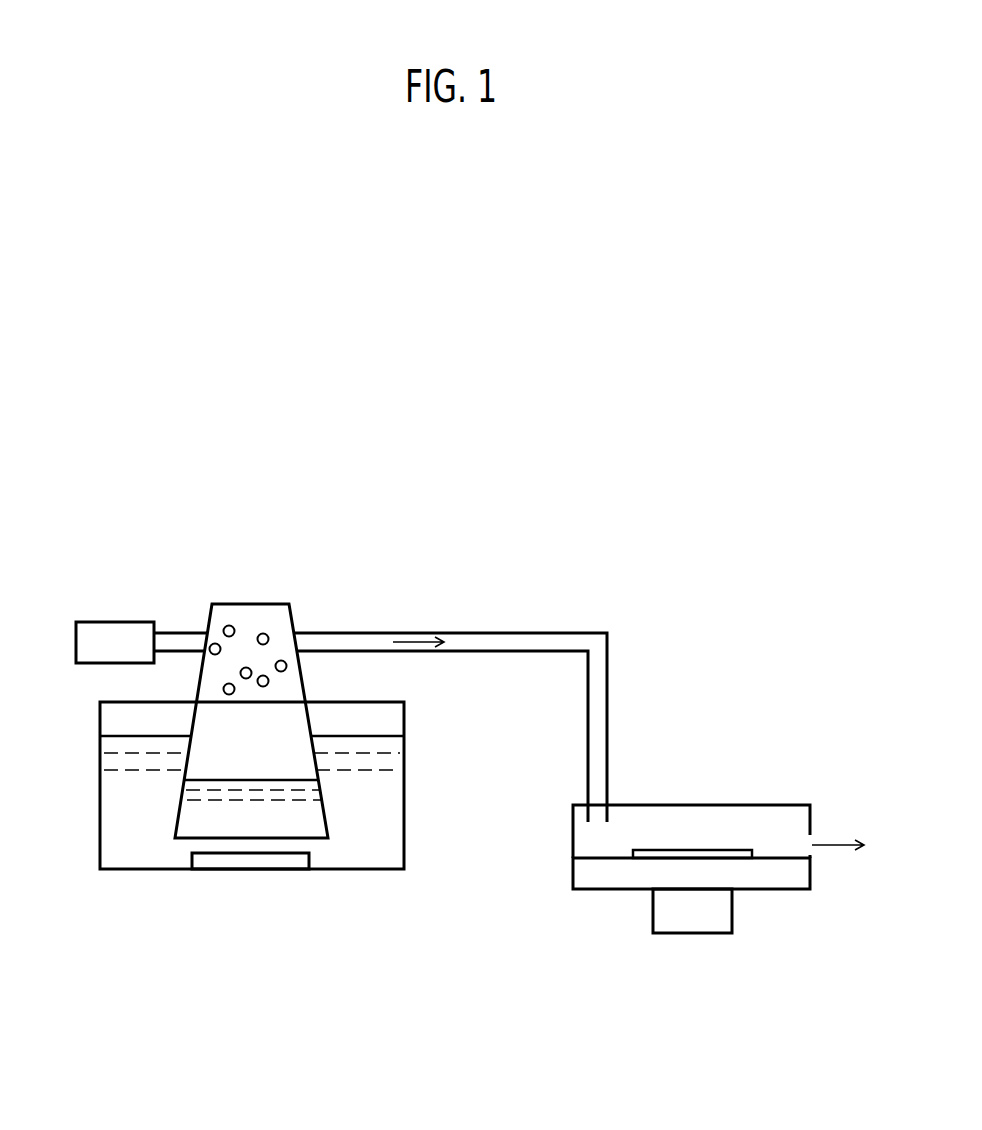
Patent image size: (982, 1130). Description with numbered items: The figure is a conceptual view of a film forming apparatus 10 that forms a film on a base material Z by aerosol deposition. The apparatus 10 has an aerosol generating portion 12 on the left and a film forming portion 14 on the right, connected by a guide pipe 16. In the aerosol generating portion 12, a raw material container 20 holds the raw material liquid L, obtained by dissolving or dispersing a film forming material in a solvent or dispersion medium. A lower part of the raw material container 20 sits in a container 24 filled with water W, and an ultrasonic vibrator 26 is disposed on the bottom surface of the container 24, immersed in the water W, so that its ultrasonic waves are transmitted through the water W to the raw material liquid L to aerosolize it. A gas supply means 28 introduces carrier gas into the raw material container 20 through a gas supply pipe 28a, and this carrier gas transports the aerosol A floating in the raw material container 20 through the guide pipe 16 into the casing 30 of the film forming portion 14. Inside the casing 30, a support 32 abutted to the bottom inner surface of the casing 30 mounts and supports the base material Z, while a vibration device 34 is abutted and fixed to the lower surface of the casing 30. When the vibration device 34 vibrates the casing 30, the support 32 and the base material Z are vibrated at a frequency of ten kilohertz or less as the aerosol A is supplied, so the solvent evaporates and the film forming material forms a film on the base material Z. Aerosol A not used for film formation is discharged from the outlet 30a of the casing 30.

The film forming apparatus 10 is at (716, 538).
The aerosol generating portion 12 is at (137, 545).
The film forming portion 14 is at (767, 757).
The guide pipe 16 is at (502, 643).
The raw material container 20 is at (273, 617).
The container 24 is at (100, 773).
The ultrasonic vibrator 26 is at (251, 862).
The gas supply means 28 is at (93, 640).
The gas supply pipe 28a is at (172, 645).
The casing 30 is at (811, 821).
The outlet 30a is at (862, 845).
The support 32 is at (775, 877).
The vibration device 34 is at (690, 923).
The aerosol A is at (230, 626).
The raw material liquid L is at (205, 818).
The water W is at (375, 830).
The base material Z is at (690, 850).